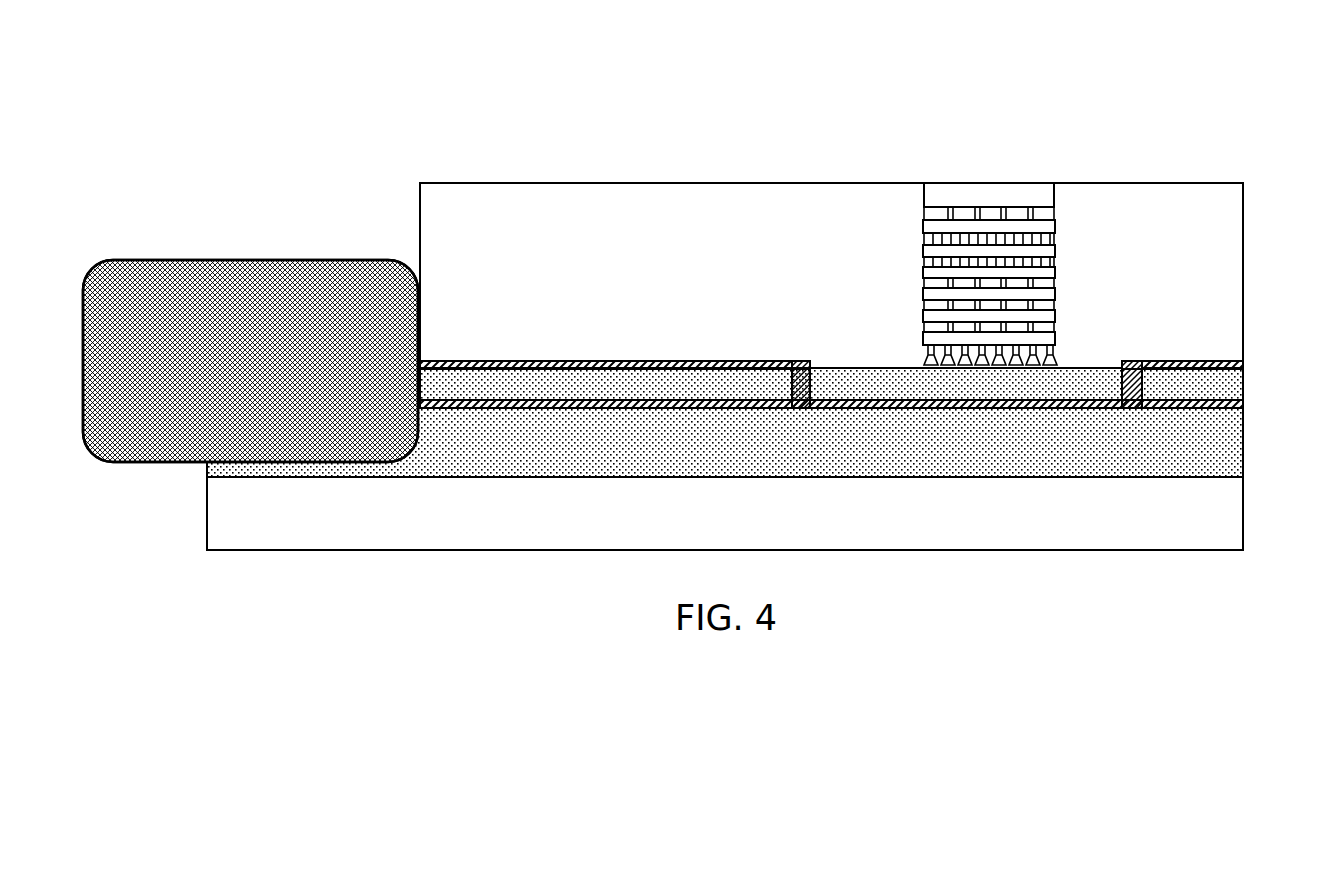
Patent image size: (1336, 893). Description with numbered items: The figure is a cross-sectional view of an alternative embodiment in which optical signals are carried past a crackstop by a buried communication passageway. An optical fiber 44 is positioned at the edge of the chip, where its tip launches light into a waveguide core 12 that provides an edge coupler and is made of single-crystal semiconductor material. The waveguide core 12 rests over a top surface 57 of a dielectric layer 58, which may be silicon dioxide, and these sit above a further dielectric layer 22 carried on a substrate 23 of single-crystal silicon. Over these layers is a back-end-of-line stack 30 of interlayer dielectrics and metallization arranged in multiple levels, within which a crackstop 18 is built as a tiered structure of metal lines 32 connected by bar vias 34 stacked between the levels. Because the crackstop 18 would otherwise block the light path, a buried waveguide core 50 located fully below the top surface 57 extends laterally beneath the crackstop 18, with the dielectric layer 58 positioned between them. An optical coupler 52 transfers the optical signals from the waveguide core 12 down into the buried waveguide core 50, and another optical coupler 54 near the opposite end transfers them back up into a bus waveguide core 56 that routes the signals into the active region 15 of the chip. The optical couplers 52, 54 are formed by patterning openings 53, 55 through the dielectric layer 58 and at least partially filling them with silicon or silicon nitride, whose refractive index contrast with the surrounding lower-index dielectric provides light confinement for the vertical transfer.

The waveguide core 12 is at (598, 363).
The active region 15 is at (1230, 148).
The crackstop 18 is at (1002, 158).
The dielectric layer 22 is at (1197, 452).
The substrate 23 is at (1190, 533).
The back-end-of-line stack 30 is at (1072, 274).
The metal lines 32 is at (940, 228).
The bar vias 34 is at (950, 261).
The optical fiber 44 is at (232, 260).
The buried waveguide core 50 is at (868, 403).
The optical coupler 52 is at (785, 363).
The opening 53 is at (790, 383).
The optical coupler 54 is at (1124, 363).
The opening 55 is at (1122, 385).
The bus waveguide core 56 is at (1190, 363).
The top surface 57 is at (562, 363).
The dielectric layer 58 is at (1188, 390).